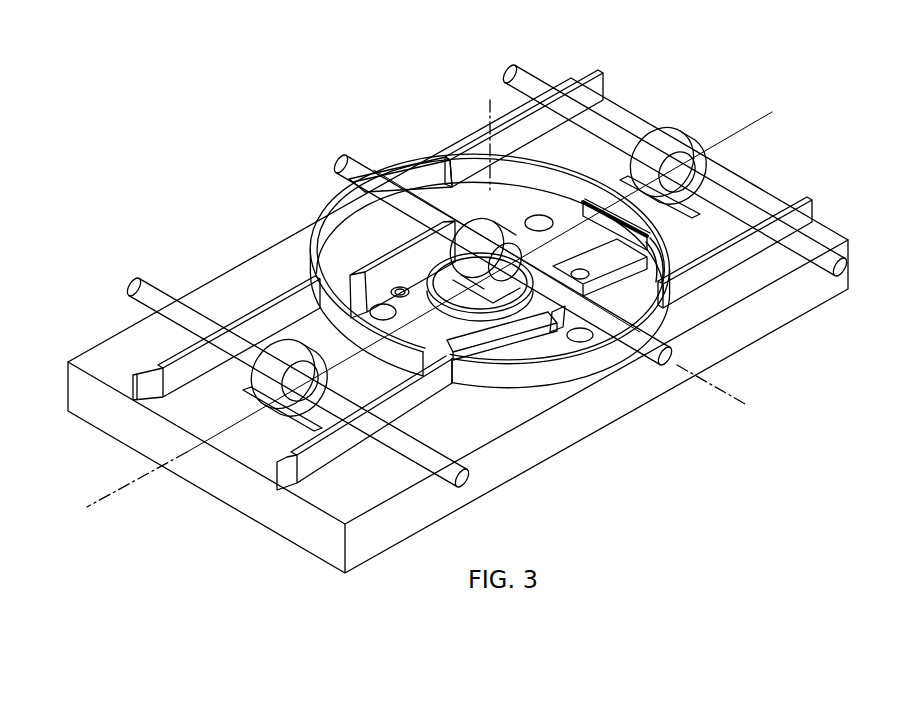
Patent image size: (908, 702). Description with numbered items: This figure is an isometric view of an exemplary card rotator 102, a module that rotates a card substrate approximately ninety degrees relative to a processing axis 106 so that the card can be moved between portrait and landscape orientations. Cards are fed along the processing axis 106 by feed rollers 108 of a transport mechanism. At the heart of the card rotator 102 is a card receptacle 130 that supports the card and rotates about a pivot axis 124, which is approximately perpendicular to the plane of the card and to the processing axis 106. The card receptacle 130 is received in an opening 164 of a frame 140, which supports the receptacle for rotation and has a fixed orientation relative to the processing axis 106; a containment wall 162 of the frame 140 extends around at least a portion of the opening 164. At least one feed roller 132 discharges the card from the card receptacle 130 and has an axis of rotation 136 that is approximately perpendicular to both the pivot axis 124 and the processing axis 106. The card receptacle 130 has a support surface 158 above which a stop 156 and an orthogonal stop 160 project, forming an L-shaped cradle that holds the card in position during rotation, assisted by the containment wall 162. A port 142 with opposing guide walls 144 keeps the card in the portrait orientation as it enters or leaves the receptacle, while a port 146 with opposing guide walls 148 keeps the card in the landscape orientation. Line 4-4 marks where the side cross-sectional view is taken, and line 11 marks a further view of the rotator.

The card rotator 102 is at (176, 140).
The processing axis 106 is at (112, 496).
The feed rollers 108 is at (257, 378).
The pivot axis 124 is at (488, 108).
The card receptacle 130 is at (397, 353).
The feed roller 132 is at (500, 226).
The axis of rotation 136 is at (713, 393).
The frame 140 is at (548, 448).
The port 142 is at (236, 446).
The guide walls 144 is at (175, 356).
The port 146 is at (755, 163).
The guide walls 148 is at (598, 72).
The stop 156 is at (632, 229).
The support surface 158 is at (412, 260).
The stop 160 is at (655, 292).
The containment wall 162 is at (410, 162).
The opening 164 is at (336, 278).
The line 4- 4 is at (727, 87).
The section line 11- 11 is at (580, 357).